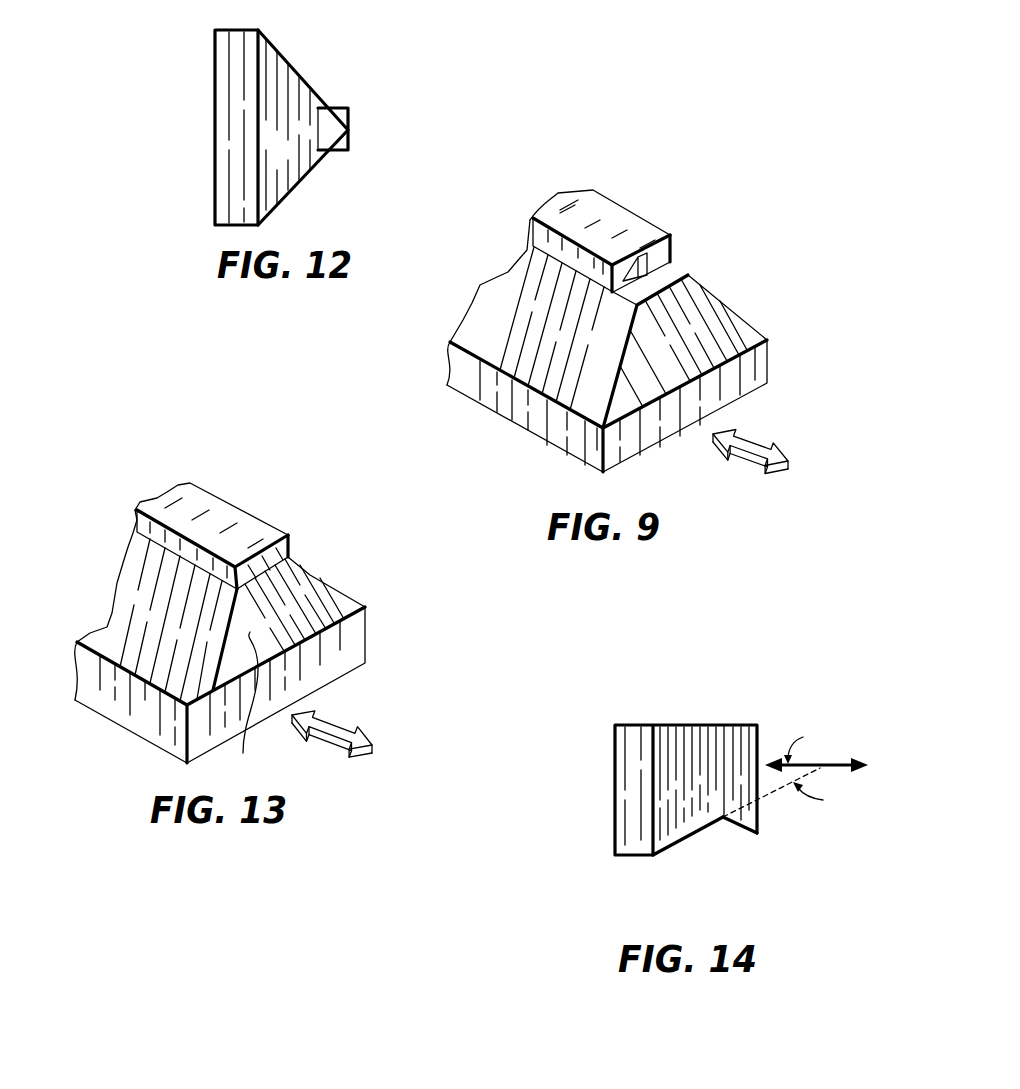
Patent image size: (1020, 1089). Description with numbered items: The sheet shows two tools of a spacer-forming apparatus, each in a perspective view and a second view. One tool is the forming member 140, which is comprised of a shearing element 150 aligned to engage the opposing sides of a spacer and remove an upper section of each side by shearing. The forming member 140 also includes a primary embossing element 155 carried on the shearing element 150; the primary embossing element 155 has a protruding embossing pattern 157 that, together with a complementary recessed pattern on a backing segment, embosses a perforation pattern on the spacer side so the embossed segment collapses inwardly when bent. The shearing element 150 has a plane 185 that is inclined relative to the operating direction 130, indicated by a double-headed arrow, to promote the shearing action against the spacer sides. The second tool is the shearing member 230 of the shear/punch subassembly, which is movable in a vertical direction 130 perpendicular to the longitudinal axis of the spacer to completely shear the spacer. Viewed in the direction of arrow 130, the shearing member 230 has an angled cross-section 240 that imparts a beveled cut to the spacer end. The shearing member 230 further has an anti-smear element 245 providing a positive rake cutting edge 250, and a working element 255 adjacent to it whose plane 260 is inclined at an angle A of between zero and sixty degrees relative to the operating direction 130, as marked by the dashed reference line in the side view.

In FIG. 9, the operating direction 130 is at (752, 450).
In FIG. 13, the operating direction 130 is at (332, 737).
In FIG. 14, the operating direction 130 is at (835, 763).
In FIG. 12, the forming member 140 is at (313, 127).
In FIG. 9, the forming member 140 is at (631, 328).
In FIG. 12, the shearing element 150 is at (290, 191).
In FIG. 9, the shearing element 150 is at (624, 350).
In FIG. 9, the primary embossing element 155 is at (636, 233).
In FIG. 9, the protruding embossing pattern 157 is at (660, 258).
In FIG. 9, the inclined plane 185 is at (658, 383).
In FIG. 13, the shearing member 230 is at (234, 633).
In FIG. 14, the shearing member 230 is at (653, 822).
In FIG. 13, the angled cross-section 240 is at (307, 570).
In FIG. 13, the anti-smear element 245 is at (282, 557).
In FIG. 14, the anti-smear element 245 is at (730, 833).
In FIG. 14, the positive rake cutting edge 250 is at (739, 834).
In FIG. 13, the working element 255 is at (323, 671).
In FIG. 14, the working element 255 is at (683, 848).
In FIG. 13, the inclined plane 260 is at (244, 707).
In FIG. 14, the angle A is at (784, 777).